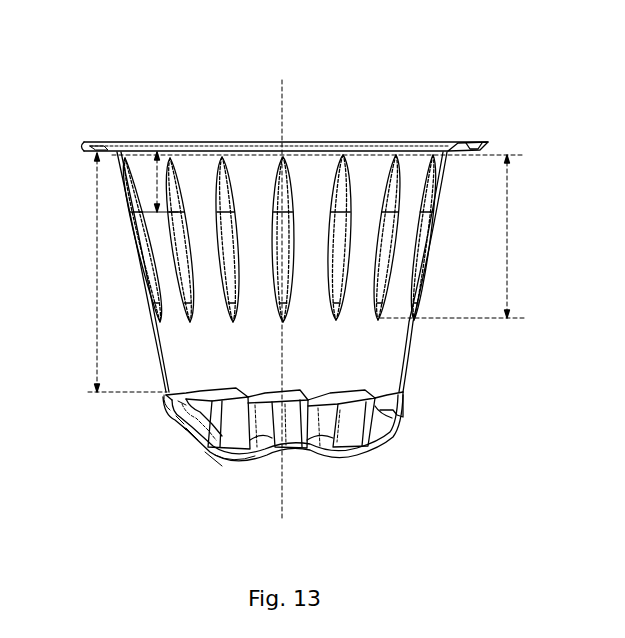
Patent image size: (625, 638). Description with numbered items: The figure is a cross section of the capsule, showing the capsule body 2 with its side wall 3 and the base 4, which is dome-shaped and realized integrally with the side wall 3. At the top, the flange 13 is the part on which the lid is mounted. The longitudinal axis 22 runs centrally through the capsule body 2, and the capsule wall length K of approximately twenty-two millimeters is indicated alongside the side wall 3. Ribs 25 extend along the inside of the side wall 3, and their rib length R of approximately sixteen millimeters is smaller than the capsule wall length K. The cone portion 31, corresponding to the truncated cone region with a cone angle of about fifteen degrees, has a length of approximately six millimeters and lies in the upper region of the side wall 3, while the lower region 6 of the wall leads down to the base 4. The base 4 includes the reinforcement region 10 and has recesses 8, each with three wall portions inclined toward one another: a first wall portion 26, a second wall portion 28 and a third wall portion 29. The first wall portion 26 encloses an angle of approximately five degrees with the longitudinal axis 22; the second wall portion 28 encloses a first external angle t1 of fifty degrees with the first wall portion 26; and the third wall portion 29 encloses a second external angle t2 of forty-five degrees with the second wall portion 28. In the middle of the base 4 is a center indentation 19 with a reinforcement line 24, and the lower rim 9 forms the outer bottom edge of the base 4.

The capsule body 2 is at (235, 70).
The flange 13 is at (100, 142).
The longitudinal axis 22 is at (280, 80).
The cone portion 31 is at (160, 183).
The ribs 25 is at (292, 172).
The rib length R is at (508, 227).
The capsule wall length K is at (97, 262).
The side wall 3 is at (137, 293).
The lower wall region 6 is at (357, 345).
The base 4 is at (418, 465).
The reinforcement region 10 is at (392, 448).
The recess 8 is at (310, 449).
The center indentation 19 is at (295, 449).
The reinforcement line 24 is at (230, 460).
The bottom rim 9 is at (217, 460).
The first wall portion 26 is at (189, 433).
The first external angle t1 is at (182, 428).
The second wall portion 28 is at (177, 420).
The second external angle t2 is at (182, 405).
The third wall portion 29 is at (168, 398).